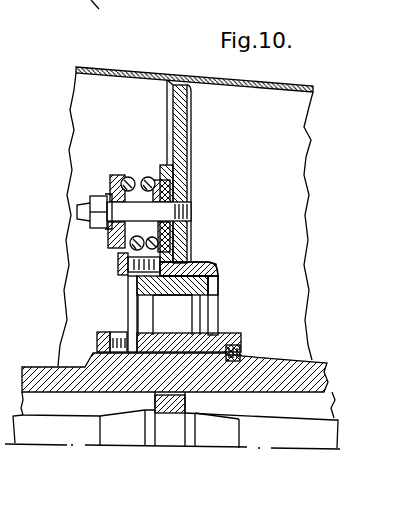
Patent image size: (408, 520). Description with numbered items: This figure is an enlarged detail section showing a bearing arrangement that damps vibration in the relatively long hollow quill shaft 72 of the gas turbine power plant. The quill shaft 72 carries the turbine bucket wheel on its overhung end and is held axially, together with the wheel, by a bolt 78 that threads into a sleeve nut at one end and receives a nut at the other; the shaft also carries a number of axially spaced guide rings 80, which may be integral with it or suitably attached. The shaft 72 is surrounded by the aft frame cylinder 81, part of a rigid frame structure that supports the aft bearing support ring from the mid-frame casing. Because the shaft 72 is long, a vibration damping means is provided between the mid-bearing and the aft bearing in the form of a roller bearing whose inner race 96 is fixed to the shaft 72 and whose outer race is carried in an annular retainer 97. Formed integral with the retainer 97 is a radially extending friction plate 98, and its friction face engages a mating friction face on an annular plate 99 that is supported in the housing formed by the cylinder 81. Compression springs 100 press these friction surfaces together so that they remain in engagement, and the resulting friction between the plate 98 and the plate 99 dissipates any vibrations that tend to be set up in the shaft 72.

The quill shaft 72 is at (41, 366).
The bolt 78 is at (302, 438).
The guide rings 80 is at (173, 407).
The aft frame cylinder 81 is at (144, 68).
The inner race 96 is at (163, 343).
The annular retainer 97 is at (210, 260).
The friction plate 98 is at (188, 240).
The annular plate 99 is at (189, 125).
The compression springs 100 is at (129, 176).